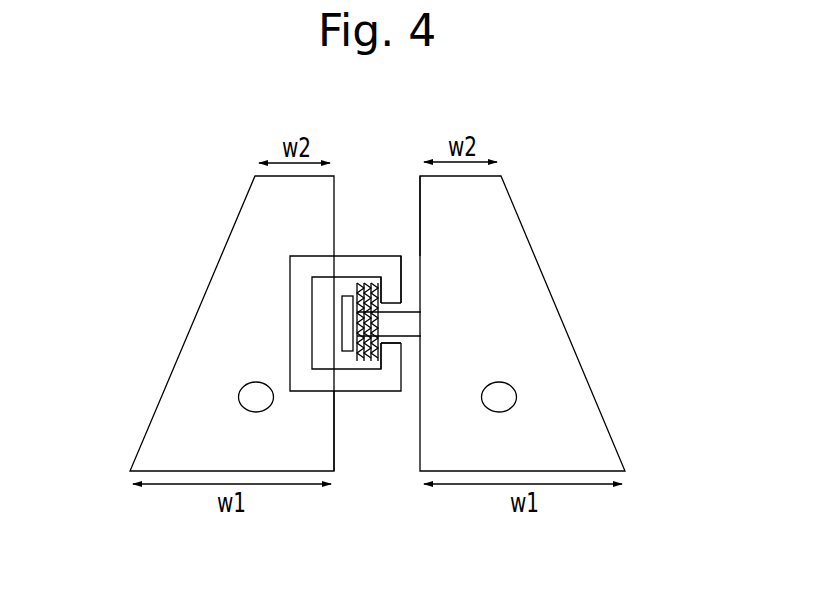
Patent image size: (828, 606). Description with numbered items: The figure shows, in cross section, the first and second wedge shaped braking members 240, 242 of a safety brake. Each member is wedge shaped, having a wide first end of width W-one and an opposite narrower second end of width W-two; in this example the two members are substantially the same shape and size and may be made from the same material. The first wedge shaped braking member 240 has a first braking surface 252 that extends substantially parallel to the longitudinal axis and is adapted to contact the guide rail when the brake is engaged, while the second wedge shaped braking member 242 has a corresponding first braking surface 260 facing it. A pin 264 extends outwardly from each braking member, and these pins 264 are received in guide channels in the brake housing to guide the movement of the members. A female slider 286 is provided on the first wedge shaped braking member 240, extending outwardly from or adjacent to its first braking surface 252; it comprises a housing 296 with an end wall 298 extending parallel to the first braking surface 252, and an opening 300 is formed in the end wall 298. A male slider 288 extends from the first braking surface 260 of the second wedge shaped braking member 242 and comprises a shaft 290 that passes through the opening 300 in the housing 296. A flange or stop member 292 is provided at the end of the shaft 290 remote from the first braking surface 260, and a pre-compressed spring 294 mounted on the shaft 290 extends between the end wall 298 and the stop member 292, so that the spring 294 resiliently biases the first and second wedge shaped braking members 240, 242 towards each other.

The first wedge shaped braking member 240 is at (181, 348).
The second wedge shaped braking member 242 is at (569, 333).
The first braking surface 252 is at (335, 438).
The first braking surface 260 is at (420, 200).
The pin 264 is at (238, 397).
The female slider 286 is at (343, 256).
The male slider 288 is at (412, 308).
The shaft 290 is at (415, 320).
The stop member 292 is at (343, 306).
The spring 294 is at (365, 358).
The housing 296 is at (366, 262).
The end wall 298 is at (401, 281).
The opening 300 is at (401, 343).